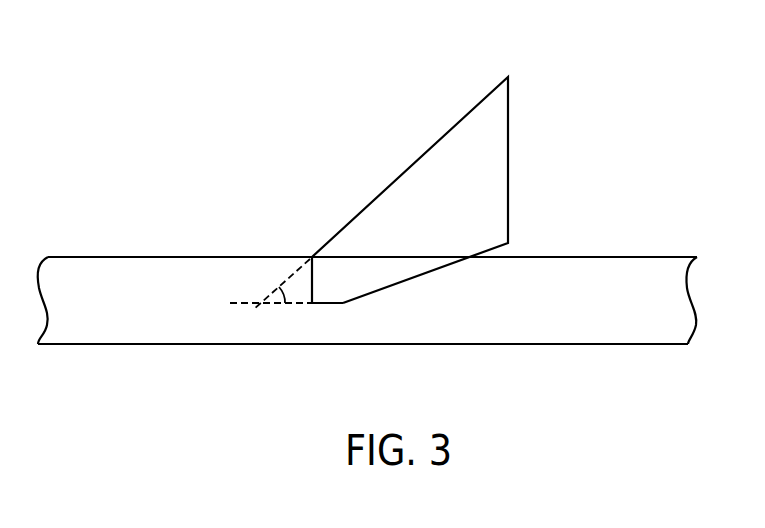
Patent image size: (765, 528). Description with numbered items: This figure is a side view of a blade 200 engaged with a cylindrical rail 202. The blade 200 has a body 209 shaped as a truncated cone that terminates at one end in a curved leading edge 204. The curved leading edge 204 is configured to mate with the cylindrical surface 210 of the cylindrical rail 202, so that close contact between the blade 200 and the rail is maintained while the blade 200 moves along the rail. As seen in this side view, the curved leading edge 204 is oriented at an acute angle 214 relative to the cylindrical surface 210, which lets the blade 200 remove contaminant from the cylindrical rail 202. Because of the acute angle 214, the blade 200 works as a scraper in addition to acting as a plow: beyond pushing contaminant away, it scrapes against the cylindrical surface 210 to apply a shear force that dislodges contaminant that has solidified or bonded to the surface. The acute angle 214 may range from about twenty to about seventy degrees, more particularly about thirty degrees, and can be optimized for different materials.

The blade 200 is at (264, 110).
The cylindrical rail 202 is at (177, 346).
The curved leading edge 204 is at (311, 270).
The body 209 is at (486, 116).
The cylindrical surface 210 is at (142, 256).
The acute angle 214 is at (280, 285).